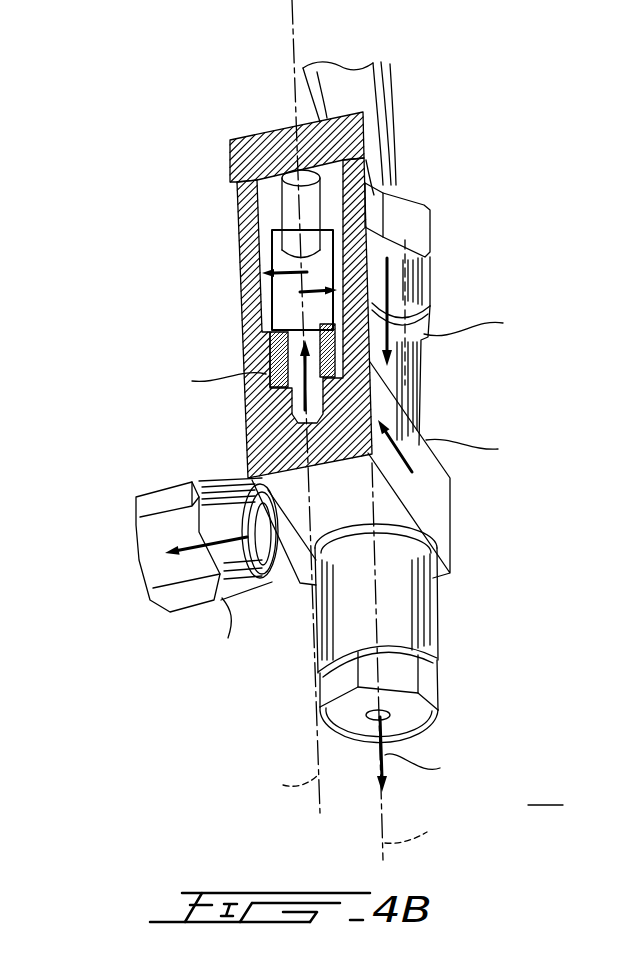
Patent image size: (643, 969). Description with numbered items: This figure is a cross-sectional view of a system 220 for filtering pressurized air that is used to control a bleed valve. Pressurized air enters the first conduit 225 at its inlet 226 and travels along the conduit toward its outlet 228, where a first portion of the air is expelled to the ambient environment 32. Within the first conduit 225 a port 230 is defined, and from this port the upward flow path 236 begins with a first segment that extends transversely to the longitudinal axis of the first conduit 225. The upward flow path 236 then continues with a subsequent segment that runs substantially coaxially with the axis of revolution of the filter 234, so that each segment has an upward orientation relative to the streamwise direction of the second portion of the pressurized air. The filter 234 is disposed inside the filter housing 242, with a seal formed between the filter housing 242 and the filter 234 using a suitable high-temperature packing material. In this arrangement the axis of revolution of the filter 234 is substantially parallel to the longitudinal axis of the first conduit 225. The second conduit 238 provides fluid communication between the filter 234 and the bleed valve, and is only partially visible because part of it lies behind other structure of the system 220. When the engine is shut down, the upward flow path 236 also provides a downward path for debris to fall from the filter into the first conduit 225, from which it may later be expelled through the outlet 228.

The system 220 is at (143, 147).
The filter housing 242 is at (240, 244).
The filter 234 is at (272, 332).
The upward flow path 236 is at (264, 416).
The inlet 226 is at (435, 264).
The first conduit 225 is at (405, 383).
The port 230 is at (447, 505).
The second conduit 238 is at (148, 564).
The outlet 228 is at (392, 716).
The ambient environment 32 is at (545, 787).